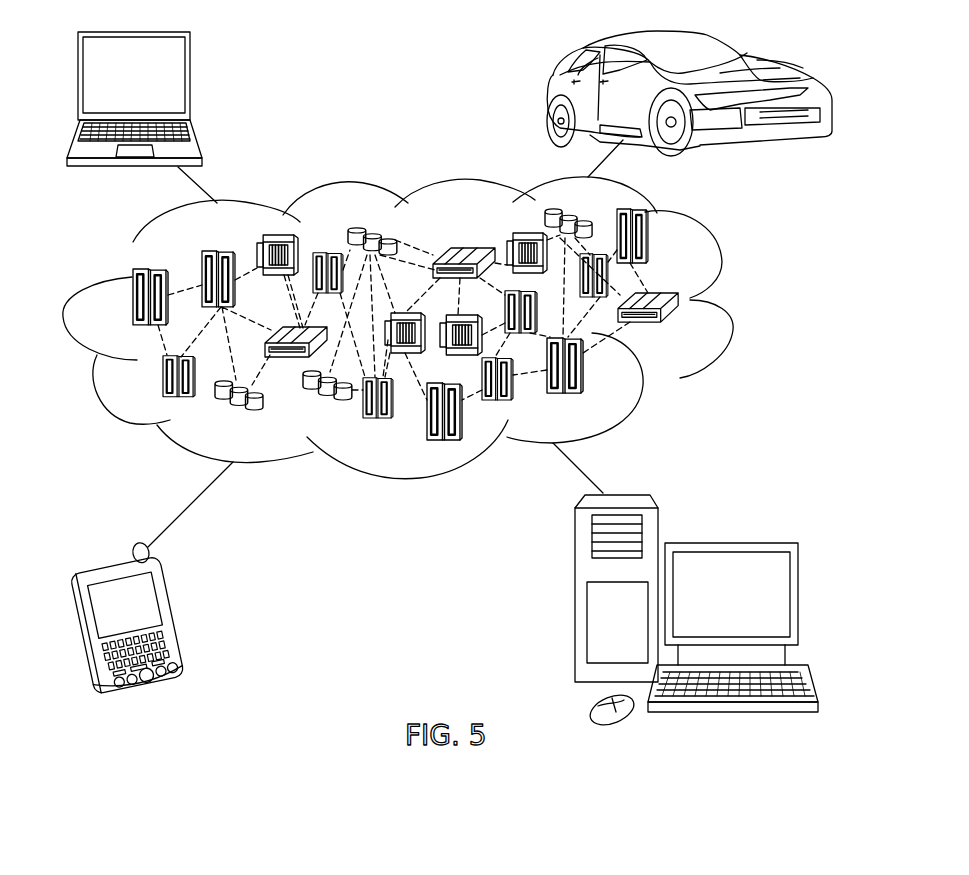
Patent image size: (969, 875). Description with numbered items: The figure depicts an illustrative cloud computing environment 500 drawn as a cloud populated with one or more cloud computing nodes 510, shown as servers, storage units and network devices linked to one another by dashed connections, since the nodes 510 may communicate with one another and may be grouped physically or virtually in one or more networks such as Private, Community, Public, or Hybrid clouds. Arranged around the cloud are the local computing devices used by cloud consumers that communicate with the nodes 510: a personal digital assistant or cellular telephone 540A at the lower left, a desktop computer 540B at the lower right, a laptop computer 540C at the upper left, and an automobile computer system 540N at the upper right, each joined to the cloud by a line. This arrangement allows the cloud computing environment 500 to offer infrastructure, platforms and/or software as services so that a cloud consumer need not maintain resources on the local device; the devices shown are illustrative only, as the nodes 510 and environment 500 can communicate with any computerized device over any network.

The cloud computing environment 500 is at (730, 303).
The cloud computing nodes 510 is at (683, 330).
The personal digital assistant or cellular telephone 540A is at (182, 617).
The desktop computer 540B is at (728, 542).
The laptop computer 540C is at (192, 82).
The automobile computer system 540N is at (550, 92).